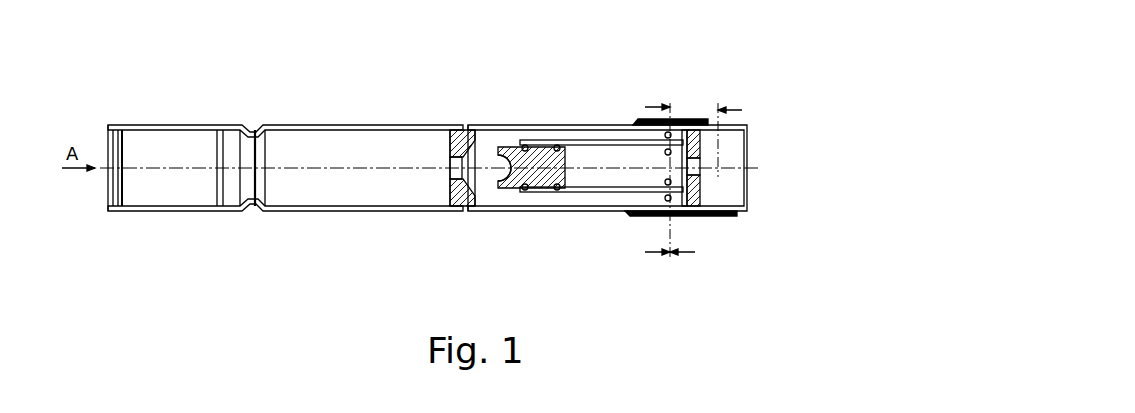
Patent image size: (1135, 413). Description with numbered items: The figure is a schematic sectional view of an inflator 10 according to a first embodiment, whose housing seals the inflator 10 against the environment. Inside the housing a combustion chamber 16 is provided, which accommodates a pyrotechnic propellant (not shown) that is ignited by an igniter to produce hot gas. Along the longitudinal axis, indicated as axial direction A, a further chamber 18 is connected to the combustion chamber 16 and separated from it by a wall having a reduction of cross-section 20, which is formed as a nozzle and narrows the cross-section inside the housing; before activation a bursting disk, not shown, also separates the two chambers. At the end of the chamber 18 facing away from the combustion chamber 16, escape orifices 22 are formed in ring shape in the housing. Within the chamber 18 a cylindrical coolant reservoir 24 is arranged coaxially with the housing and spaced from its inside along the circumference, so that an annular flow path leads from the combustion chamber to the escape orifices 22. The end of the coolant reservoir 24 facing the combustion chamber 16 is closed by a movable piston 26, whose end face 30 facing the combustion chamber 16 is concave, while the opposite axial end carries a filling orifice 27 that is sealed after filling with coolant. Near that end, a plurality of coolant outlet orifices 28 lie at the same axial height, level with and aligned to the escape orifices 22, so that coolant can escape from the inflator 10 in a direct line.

The inflator 10 is at (757, 64).
The combustion chamber 16 is at (292, 148).
The chamber 18 is at (573, 197).
The reduction of cross-section 20 is at (450, 172).
The escape orifices 22 is at (676, 212).
The coolant reservoir 24 is at (600, 156).
The movable piston 26 is at (518, 150).
The filling orifice 27 is at (703, 172).
The coolant outlet orifices 28 is at (682, 118).
The end face 30 is at (497, 175).